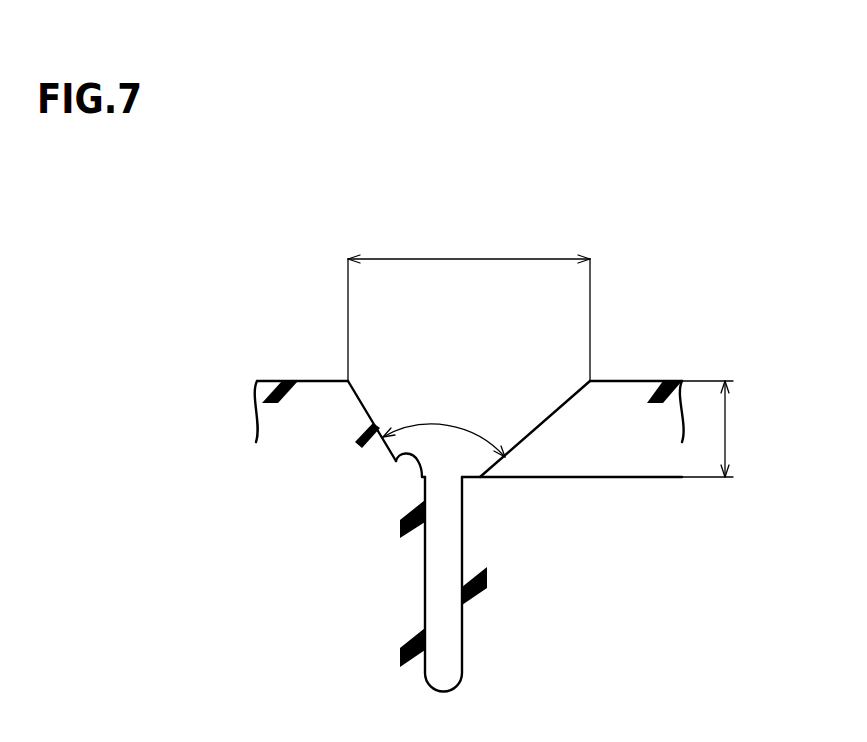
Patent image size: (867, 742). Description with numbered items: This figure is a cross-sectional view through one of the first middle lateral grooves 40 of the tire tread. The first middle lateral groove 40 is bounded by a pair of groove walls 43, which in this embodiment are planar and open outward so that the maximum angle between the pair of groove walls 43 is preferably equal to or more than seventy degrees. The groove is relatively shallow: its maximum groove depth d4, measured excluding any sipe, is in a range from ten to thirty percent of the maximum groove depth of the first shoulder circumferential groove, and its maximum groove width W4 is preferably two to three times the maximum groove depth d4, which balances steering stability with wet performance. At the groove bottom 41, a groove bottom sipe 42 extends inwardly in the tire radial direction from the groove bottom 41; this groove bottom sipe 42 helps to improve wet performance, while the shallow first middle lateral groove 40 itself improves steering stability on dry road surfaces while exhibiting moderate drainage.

The first middle lateral groove 40 is at (432, 385).
The groove bottom 41 is at (396, 459).
The groove bottom sipe 42 is at (445, 577).
The groove wall 43 is at (362, 400).
The maximum groove width W4 is at (469, 302).
The maximum groove depth d4 is at (726, 429).